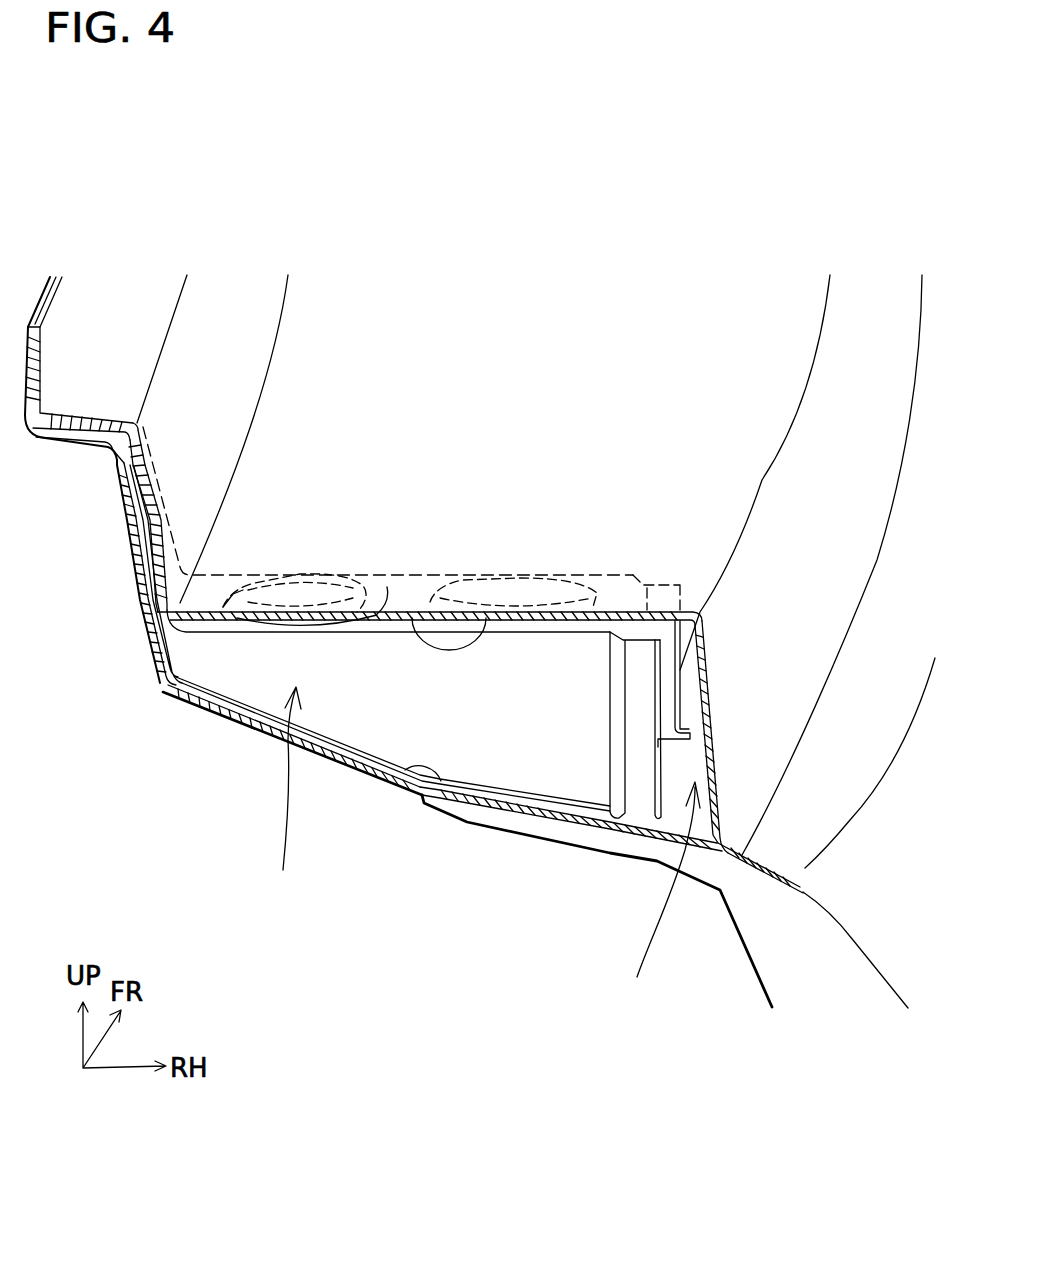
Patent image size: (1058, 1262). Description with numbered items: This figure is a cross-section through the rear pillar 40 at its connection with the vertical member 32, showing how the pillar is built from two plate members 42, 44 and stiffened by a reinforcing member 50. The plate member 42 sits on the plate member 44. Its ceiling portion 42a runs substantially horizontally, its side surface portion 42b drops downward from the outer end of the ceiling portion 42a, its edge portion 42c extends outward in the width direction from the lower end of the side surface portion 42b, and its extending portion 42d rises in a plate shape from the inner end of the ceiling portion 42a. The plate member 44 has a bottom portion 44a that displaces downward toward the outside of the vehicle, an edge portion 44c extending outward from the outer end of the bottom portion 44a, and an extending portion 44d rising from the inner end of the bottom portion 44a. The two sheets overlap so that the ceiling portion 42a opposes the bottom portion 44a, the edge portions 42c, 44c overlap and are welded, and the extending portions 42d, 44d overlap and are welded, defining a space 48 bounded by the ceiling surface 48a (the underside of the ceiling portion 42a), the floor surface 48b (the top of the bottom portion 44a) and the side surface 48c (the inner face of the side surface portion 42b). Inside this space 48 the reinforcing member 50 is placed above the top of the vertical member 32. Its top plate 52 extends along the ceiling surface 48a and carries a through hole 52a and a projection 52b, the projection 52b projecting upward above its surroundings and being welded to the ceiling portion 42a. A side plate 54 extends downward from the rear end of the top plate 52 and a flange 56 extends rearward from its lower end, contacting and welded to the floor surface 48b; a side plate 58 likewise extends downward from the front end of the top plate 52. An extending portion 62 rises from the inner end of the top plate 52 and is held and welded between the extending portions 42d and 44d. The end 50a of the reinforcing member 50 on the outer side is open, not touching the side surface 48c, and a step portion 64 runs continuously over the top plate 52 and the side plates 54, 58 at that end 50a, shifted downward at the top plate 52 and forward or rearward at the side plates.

The vertical member 32 is at (795, 965).
The rear pillar 40 is at (151, 170).
The plate member 42 is at (656, 592).
The ceiling portion 42a is at (390, 622).
The side surface portion 42b is at (714, 848).
The edge portion 42c is at (740, 977).
The extending portion 42d is at (145, 465).
The plate member 44 is at (393, 744).
The bottom portion 44a is at (368, 778).
The edge portion 44c is at (760, 872).
The extending portion 44d is at (150, 616).
The space 48 is at (650, 814).
The ceiling surface 48a is at (488, 610).
The floor surface 48b is at (435, 805).
The side surface 48c is at (728, 850).
The reinforcing member 50 is at (284, 716).
The end 50a is at (658, 747).
The top plate 52 is at (614, 590).
The through hole 52a is at (542, 590).
The projection 52b is at (285, 590).
The side plate 54 is at (240, 665).
The flange 56 is at (483, 797).
The side plate 58 is at (703, 650).
The extending portion 62 is at (140, 540).
The step portion 64 is at (637, 678).